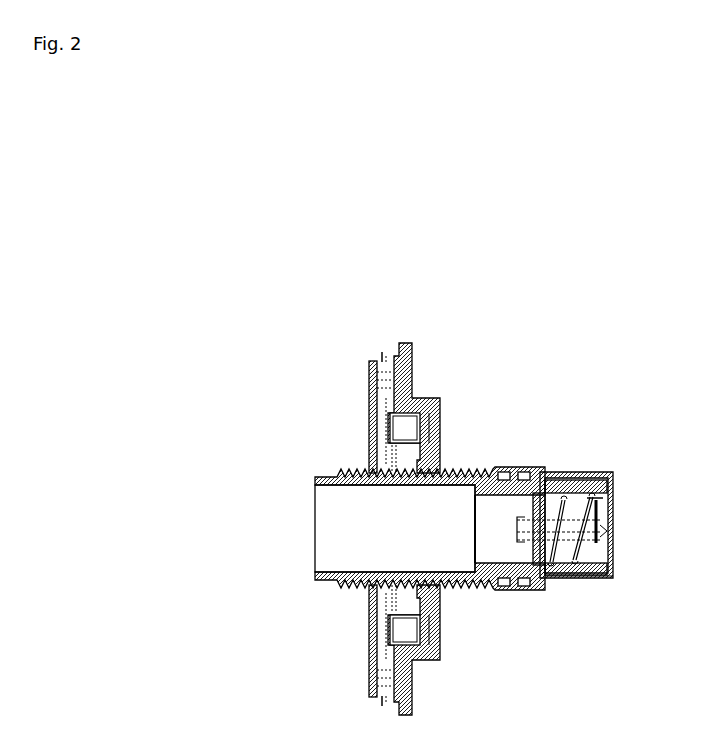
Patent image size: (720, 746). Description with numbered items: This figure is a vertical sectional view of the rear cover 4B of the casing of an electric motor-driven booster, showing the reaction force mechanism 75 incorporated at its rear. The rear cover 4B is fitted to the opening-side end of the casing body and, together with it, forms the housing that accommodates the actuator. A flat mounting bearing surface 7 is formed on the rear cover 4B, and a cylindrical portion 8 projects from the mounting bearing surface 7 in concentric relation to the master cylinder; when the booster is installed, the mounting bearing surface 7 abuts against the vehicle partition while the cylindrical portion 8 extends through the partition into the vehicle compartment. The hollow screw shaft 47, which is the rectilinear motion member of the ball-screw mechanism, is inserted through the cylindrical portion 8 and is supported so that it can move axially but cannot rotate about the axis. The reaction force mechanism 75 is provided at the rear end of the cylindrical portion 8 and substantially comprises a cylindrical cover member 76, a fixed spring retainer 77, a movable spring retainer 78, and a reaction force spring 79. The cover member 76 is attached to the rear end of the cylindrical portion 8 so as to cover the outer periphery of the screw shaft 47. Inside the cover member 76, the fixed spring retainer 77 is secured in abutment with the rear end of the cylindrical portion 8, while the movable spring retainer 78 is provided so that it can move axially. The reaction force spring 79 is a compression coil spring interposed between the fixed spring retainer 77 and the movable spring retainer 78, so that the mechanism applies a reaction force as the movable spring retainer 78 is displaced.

The mounting bearing surface 7 is at (442, 418).
The screw shaft 47 is at (492, 470).
The fixed spring retainer 77 is at (538, 470).
The reaction force mechanism 75 is at (600, 457).
The movable spring retainer 78 is at (607, 495).
The cylindrical portion 8 is at (483, 597).
The reaction force spring 79 is at (575, 567).
The cover member 76 is at (597, 580).
The rear cover 4B is at (410, 690).